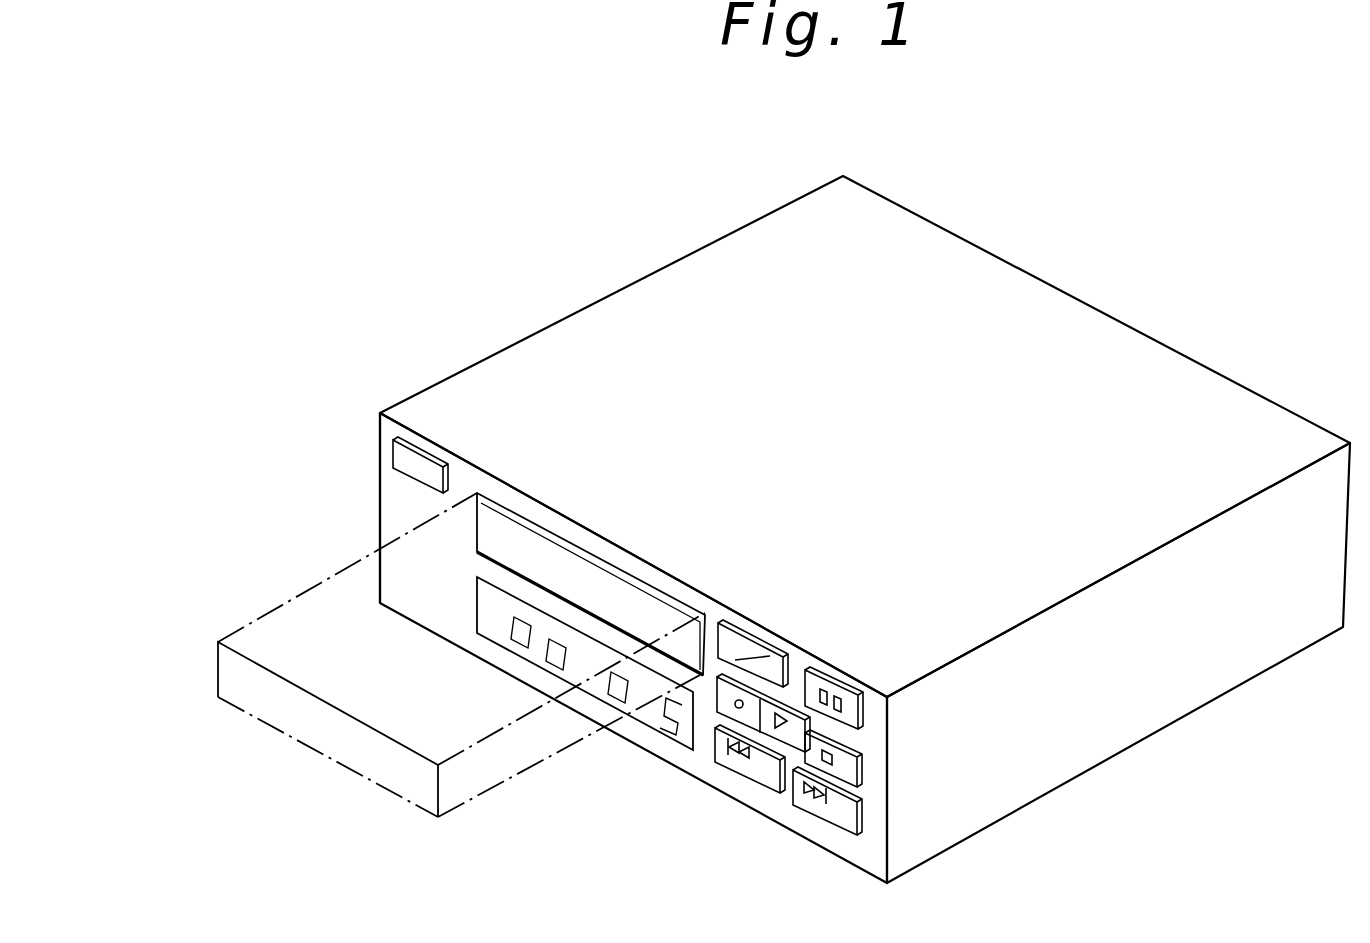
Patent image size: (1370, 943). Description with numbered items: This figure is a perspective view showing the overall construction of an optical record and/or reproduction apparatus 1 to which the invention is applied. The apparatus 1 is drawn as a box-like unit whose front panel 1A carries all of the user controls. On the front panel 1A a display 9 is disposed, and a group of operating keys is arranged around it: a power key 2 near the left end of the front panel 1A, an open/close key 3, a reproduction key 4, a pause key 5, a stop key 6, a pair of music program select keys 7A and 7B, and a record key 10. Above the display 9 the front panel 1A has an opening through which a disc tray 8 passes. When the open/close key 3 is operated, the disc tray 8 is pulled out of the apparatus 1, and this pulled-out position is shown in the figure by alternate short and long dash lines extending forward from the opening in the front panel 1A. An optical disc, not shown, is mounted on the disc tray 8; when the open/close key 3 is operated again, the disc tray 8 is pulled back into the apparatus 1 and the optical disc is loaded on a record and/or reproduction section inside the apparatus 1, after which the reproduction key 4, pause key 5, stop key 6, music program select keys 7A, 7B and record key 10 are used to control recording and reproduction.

The optical record and/or reproduction apparatus 1 is at (470, 323).
The front panel 1A is at (390, 502).
The power key 2 is at (393, 447).
The open/close key 3 is at (748, 630).
The reproduction key 4 is at (787, 715).
The pause key 5 is at (860, 713).
The stop key 6 is at (850, 763).
The music program select key 7A is at (747, 780).
The music program select key 7B is at (823, 825).
The disc tray 8 is at (602, 577).
The display 9 is at (596, 692).
The record key 10 is at (713, 722).